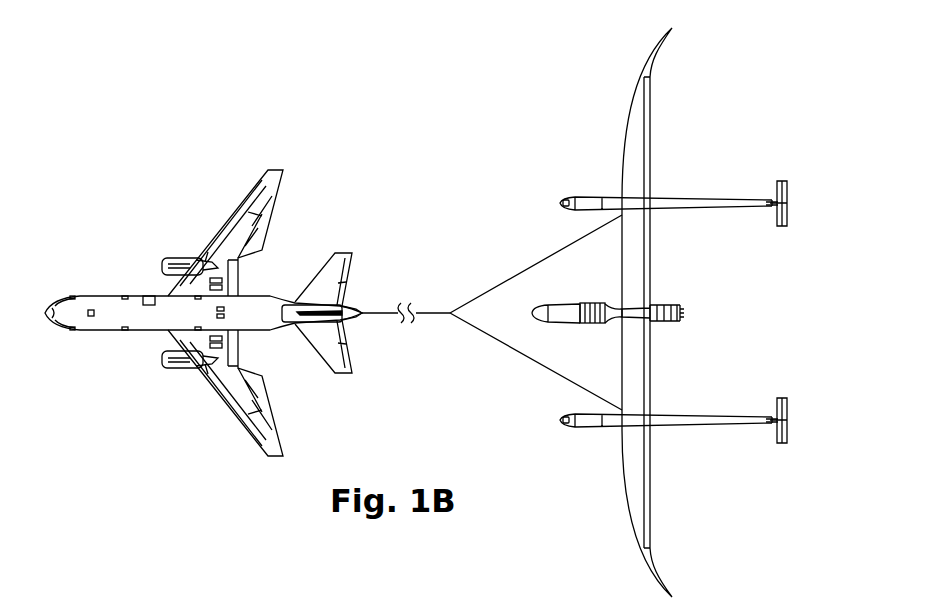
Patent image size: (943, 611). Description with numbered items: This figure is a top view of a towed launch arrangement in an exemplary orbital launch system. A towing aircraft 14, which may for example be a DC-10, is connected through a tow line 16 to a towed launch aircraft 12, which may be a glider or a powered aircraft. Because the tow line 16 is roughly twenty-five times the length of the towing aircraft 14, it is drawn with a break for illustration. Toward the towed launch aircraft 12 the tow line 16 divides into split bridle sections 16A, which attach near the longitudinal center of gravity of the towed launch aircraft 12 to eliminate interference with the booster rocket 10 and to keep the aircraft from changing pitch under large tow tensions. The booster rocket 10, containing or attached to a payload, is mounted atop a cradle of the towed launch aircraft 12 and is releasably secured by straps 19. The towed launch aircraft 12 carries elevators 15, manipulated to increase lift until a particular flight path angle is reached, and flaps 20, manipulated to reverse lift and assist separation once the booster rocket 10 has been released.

The towing aircraft 14 is at (106, 295).
The tow line 16 is at (381, 312).
The split bridle sections 16A is at (551, 246).
The booster rocket 10 is at (578, 306).
The straps 19 is at (580, 320).
The towed launch aircraft 12 is at (685, 430).
The flaps 20 is at (651, 389).
The elevators 15 is at (782, 398).